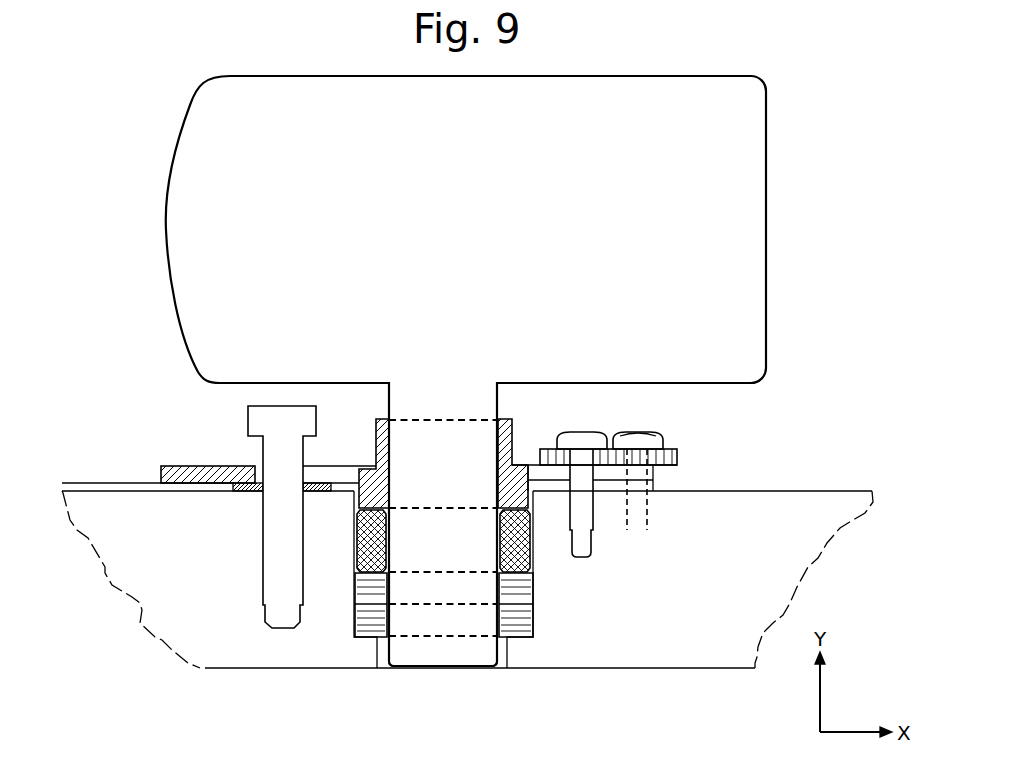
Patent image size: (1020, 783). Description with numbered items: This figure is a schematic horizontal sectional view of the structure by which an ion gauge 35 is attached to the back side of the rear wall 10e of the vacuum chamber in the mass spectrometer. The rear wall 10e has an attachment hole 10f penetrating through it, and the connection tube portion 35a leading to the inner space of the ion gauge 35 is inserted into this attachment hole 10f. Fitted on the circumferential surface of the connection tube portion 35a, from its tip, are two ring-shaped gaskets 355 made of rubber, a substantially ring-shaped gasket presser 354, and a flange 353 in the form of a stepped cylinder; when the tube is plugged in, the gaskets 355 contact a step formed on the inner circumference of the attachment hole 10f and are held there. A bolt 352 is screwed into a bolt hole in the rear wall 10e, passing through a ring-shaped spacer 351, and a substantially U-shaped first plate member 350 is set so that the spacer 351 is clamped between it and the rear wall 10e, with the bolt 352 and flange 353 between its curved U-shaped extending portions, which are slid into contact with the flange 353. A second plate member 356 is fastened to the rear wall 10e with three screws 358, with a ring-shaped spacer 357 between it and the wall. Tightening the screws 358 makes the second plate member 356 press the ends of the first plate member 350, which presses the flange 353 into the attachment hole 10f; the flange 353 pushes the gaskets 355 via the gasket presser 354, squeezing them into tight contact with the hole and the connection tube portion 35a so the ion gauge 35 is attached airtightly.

The ion gauge 35 is at (188, 107).
The connection tube portion 35a is at (433, 659).
The rear wall 10e is at (822, 497).
The attachment hole 10f is at (382, 660).
The first plate member 350 is at (161, 466).
The ring-shaped spacer 351 is at (235, 490).
The bolt 352 is at (248, 425).
The flange 353 is at (375, 419).
The gasket presser 354 is at (358, 548).
The ring-shaped gaskets 355 is at (533, 632).
The second plate member 356 is at (678, 453).
The ring-shaped spacer 357 is at (653, 487).
The screws 358 is at (667, 440).